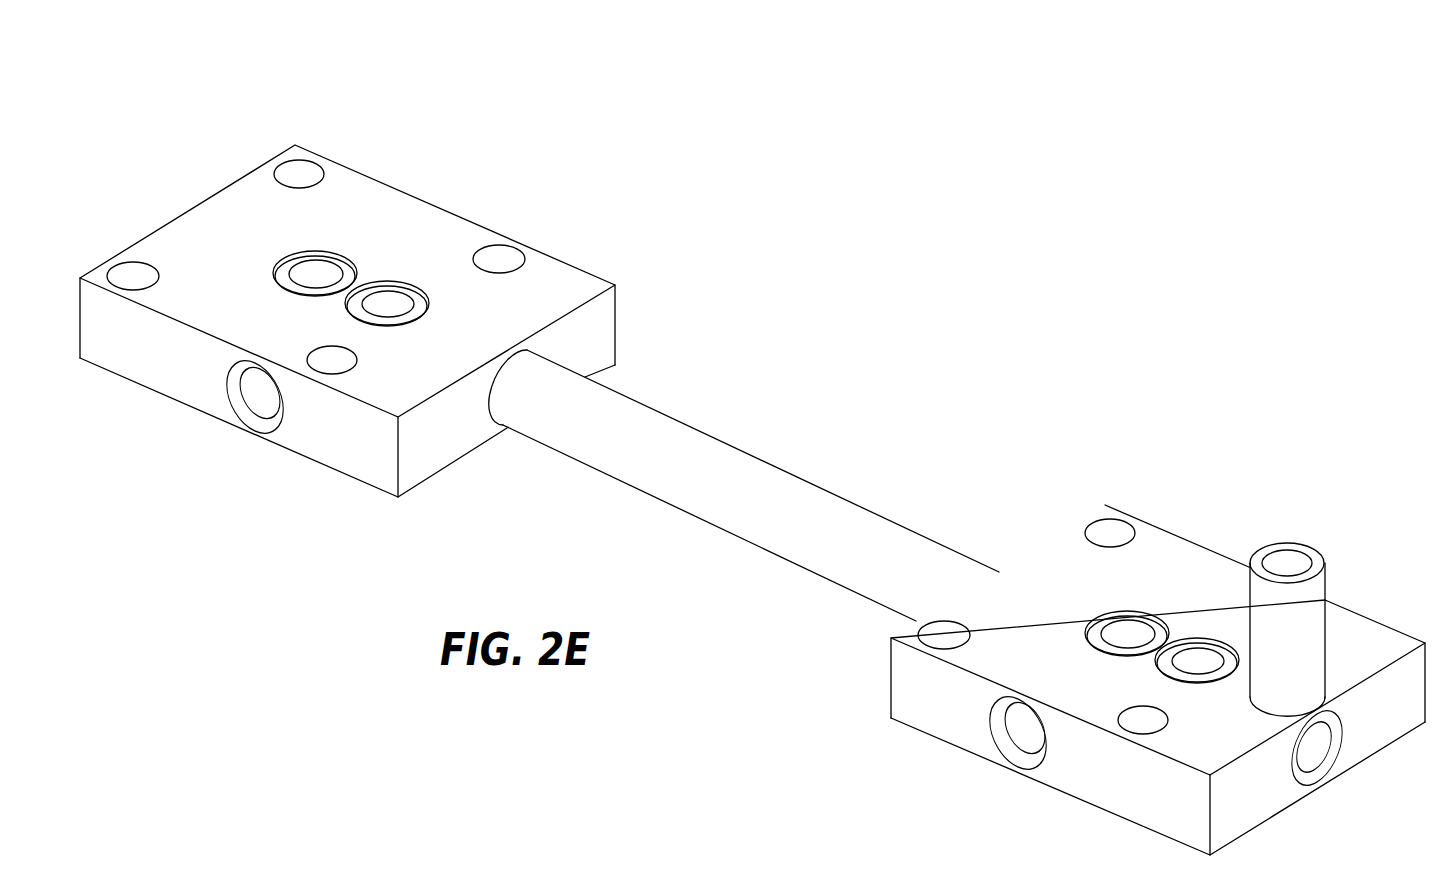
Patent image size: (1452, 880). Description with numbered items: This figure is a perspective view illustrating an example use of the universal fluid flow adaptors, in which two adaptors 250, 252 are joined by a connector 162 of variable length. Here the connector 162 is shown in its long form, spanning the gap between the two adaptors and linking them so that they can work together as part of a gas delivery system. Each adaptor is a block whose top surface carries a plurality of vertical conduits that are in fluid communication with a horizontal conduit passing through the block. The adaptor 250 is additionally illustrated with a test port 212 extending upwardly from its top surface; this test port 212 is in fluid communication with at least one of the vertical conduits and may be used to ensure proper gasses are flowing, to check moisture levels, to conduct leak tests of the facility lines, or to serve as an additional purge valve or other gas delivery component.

The adaptor 252 is at (339, 129).
The adaptor 250 is at (1158, 480).
The test port 212 is at (1298, 623).
The connector 162 is at (727, 485).